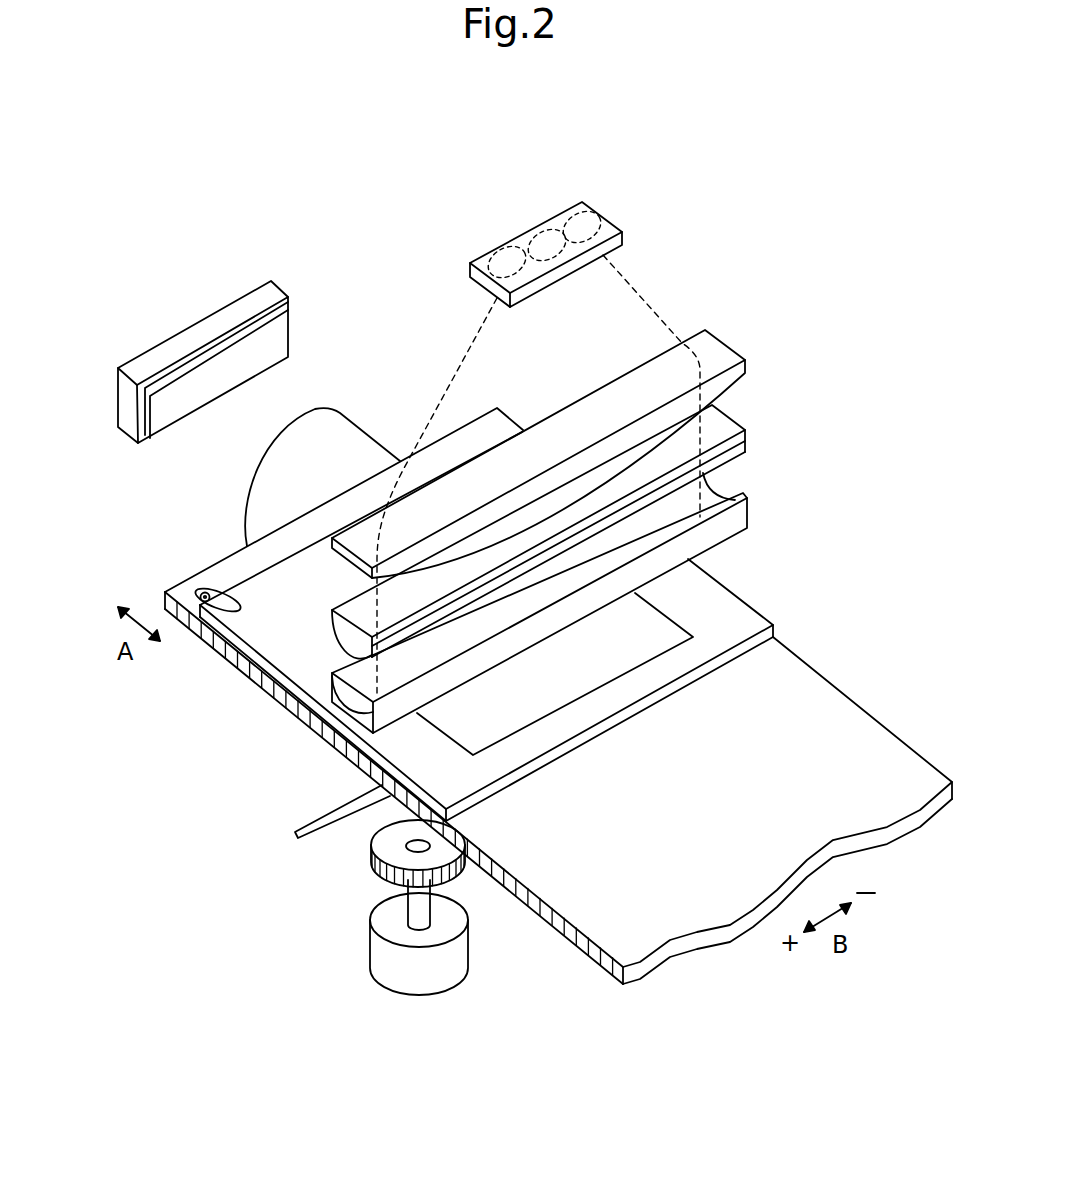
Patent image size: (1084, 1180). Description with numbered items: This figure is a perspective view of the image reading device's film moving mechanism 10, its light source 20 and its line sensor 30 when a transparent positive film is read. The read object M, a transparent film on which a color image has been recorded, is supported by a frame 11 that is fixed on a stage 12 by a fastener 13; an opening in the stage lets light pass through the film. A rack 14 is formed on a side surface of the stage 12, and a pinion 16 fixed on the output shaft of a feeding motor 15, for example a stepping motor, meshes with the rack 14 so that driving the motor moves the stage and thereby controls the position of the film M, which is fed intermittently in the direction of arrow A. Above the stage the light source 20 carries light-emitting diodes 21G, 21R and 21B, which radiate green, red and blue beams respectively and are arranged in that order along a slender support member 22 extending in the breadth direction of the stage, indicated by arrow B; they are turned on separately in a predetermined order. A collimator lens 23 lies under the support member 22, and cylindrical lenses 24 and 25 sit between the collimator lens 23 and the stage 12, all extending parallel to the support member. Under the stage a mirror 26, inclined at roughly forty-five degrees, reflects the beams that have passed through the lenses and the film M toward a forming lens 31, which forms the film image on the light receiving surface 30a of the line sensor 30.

The film moving mechanism 10 is at (356, 922).
The frame 11 is at (637, 685).
The stage 12 is at (905, 758).
The fastener 13 is at (207, 590).
The rack 14 is at (577, 943).
The feeding motor 15 is at (328, 947).
The pinion 16 is at (372, 863).
The light source 20 is at (557, 427).
The light-emitting diode 21G is at (490, 251).
The light-emitting diode 21R is at (521, 229).
The light-emitting diode 21B is at (566, 201).
The support member 22 is at (617, 238).
The collimator lens 23 is at (715, 350).
The cylindrical lens 24 is at (727, 430).
The cylindrical lens 25 is at (738, 517).
The mirror 26 is at (343, 805).
The line sensor 30 is at (230, 339).
The light receiving surface 30a is at (277, 347).
The forming lens 31 is at (258, 488).
The read object M is at (655, 647).